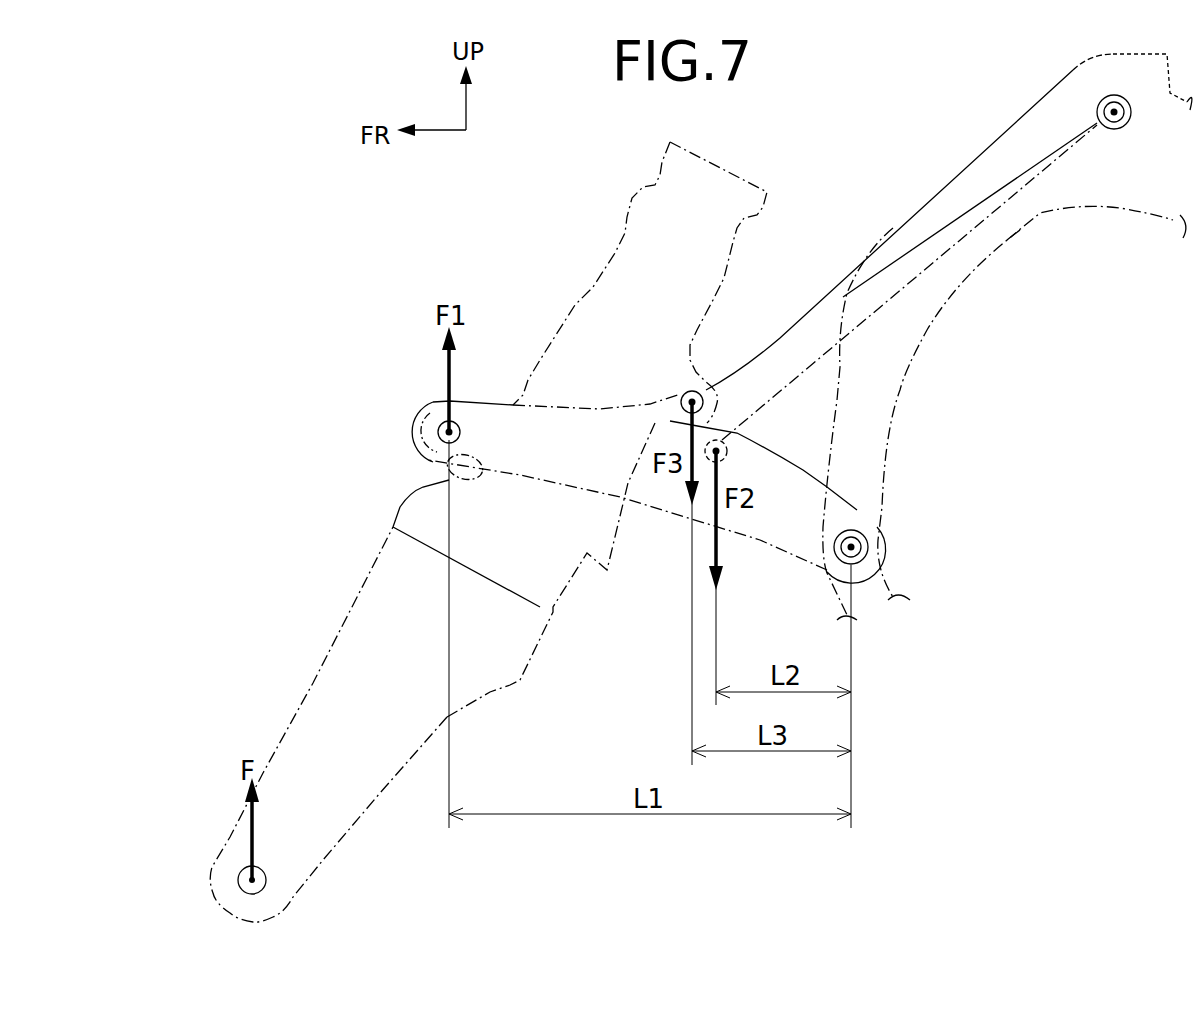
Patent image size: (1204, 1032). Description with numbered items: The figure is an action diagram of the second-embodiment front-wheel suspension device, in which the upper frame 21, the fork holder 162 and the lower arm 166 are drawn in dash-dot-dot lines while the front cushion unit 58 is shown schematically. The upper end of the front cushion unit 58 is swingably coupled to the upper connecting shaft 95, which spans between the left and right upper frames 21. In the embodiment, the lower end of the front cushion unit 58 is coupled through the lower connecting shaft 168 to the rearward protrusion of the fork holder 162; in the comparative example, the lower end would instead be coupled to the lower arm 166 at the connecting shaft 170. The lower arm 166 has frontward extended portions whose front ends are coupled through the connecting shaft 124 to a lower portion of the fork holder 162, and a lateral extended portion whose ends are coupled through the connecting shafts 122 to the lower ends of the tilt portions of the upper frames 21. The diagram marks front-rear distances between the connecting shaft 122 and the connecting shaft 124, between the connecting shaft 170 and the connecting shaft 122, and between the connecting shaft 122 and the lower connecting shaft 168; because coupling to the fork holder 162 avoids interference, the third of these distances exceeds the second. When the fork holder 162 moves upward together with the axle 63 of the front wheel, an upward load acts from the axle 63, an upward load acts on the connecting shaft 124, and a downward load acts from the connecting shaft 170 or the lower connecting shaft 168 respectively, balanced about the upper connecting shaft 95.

The upper frame 21 is at (1007, 130).
The upper connecting shaft 95 is at (1100, 100).
The front cushion unit 58 is at (903, 253).
The fork holder 162 is at (575, 305).
The lower connecting shaft 168 is at (682, 396).
The connecting shaft 124 is at (417, 420).
The connecting shaft 122 is at (880, 543).
The lower arm 166 is at (668, 508).
The connecting shaft 170 is at (727, 457).
The axle 63 is at (267, 880).